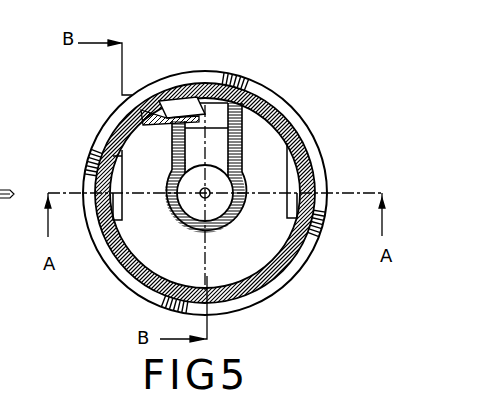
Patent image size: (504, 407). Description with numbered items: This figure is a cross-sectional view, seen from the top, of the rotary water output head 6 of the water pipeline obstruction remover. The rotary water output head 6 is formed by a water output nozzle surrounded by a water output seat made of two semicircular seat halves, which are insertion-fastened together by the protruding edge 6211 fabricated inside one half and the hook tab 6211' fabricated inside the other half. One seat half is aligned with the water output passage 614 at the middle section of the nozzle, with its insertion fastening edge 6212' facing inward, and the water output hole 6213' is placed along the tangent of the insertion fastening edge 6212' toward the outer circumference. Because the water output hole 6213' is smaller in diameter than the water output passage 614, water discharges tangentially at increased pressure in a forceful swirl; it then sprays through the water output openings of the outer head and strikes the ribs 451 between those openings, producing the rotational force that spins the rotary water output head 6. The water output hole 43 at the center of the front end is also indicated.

The rotary water output head 6 is at (314, 177).
The ribs 451 is at (245, 78).
The water output passage 614 is at (195, 143).
The protruding edge 6211 is at (69, 230).
The hook tab 6211' is at (339, 231).
The insertion fastening edge 6212' is at (305, 128).
The water output hole 6213' is at (206, 100).
The water output hole 43 is at (241, 402).